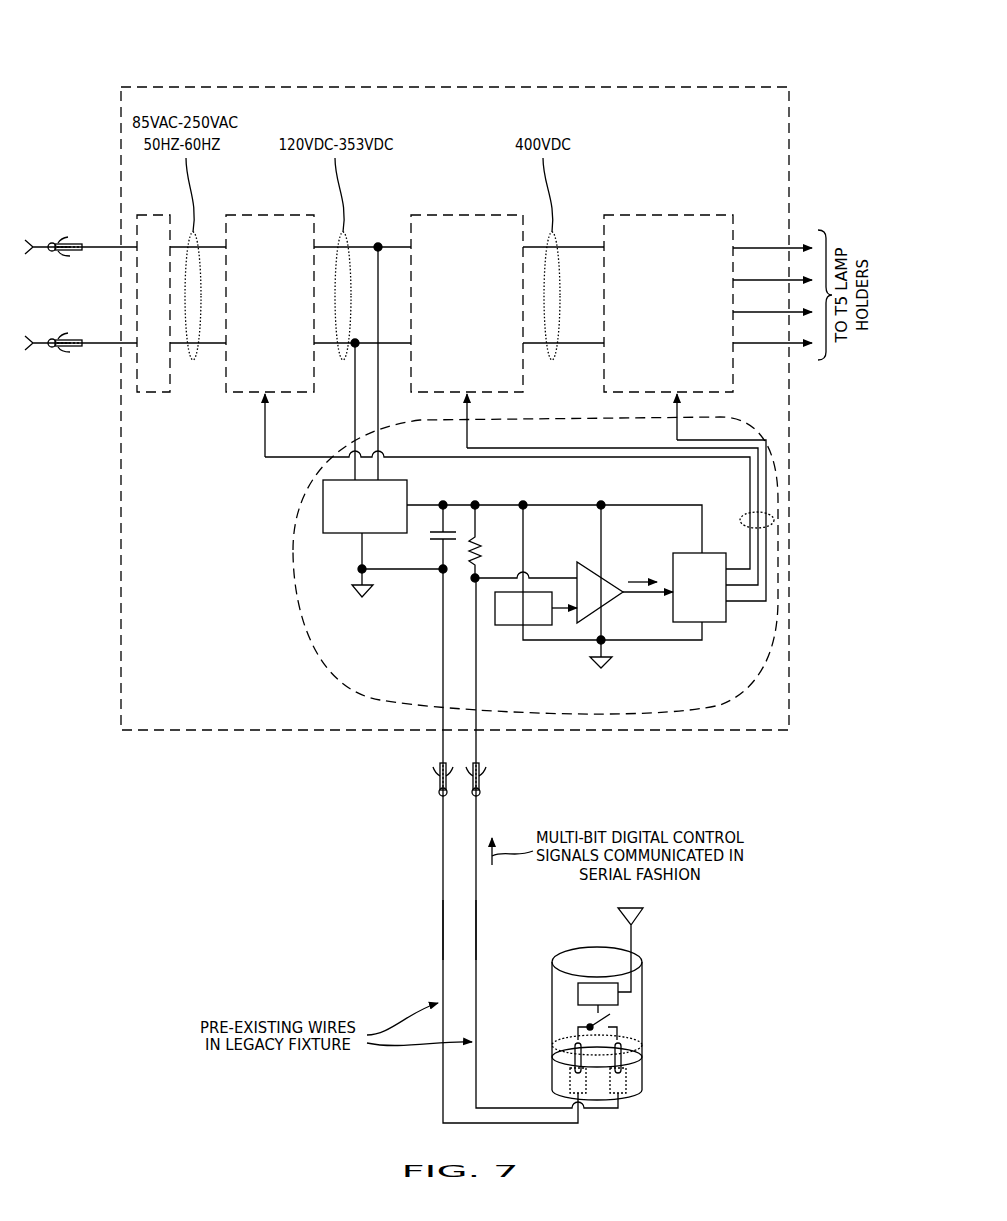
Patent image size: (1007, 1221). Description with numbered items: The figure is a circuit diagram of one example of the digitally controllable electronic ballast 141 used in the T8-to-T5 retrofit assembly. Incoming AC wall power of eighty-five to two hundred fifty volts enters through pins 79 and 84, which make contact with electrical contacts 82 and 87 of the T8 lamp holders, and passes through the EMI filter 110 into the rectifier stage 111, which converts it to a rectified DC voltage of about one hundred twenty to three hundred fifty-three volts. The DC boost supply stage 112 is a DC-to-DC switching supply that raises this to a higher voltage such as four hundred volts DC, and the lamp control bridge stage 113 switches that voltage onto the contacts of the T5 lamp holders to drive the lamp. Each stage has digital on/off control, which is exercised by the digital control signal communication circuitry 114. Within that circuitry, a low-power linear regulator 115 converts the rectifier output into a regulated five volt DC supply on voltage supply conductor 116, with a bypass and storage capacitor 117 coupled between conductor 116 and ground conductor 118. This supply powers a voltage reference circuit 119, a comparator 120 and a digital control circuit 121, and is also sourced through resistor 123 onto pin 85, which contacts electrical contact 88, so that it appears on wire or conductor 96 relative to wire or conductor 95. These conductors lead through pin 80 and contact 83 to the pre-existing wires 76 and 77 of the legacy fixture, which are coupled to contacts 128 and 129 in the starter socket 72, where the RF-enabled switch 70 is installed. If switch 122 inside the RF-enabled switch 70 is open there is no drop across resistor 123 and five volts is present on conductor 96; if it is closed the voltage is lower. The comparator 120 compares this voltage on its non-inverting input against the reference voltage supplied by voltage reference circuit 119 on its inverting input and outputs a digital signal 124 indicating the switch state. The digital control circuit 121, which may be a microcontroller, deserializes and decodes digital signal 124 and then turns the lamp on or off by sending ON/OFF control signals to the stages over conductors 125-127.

The digitally controllable electronic ballast 141 is at (582, 87).
The EMI filter 110 is at (147, 215).
The rectifier stage 111 is at (251, 299).
The DC boost supply stage 112 is at (453, 299).
The lamp control bridge stage 113 is at (654, 299).
The digital control signal communication circuitry 114 is at (293, 550).
The linear regulator 115 is at (333, 533).
The voltage supply conductor 116 is at (536, 505).
The bypass and storage capacitor 117 is at (430, 536).
The ground conductor 118 is at (396, 569).
The voltage reference circuit 119 is at (500, 625).
The comparator 120 is at (580, 604).
The digital control circuit 121 is at (685, 597).
The resistor 123 is at (483, 554).
The digital signal 124 is at (634, 580).
The conductors 125-127 is at (775, 520).
The pin 79 is at (67, 241).
The electrical contact 82 is at (60, 252).
The electrical contact 87 is at (60, 340).
The pin 84 is at (68, 351).
The wire or conductor 95 is at (443, 679).
The wire or conductor 96 is at (476, 679).
The pin 80 is at (438, 768).
The electrical contact 83 is at (438, 792).
The pin 85 is at (481, 768).
The electrical contact 88 is at (481, 792).
The wire or conductor 76 is at (443, 926).
The wire or conductor 77 is at (476, 926).
The RF-enabled switch 70 is at (664, 963).
The switch 122 is at (586, 1020).
The starter socket 72 is at (643, 1076).
The contact 128 is at (583, 1092).
The contact 129 is at (626, 1090).